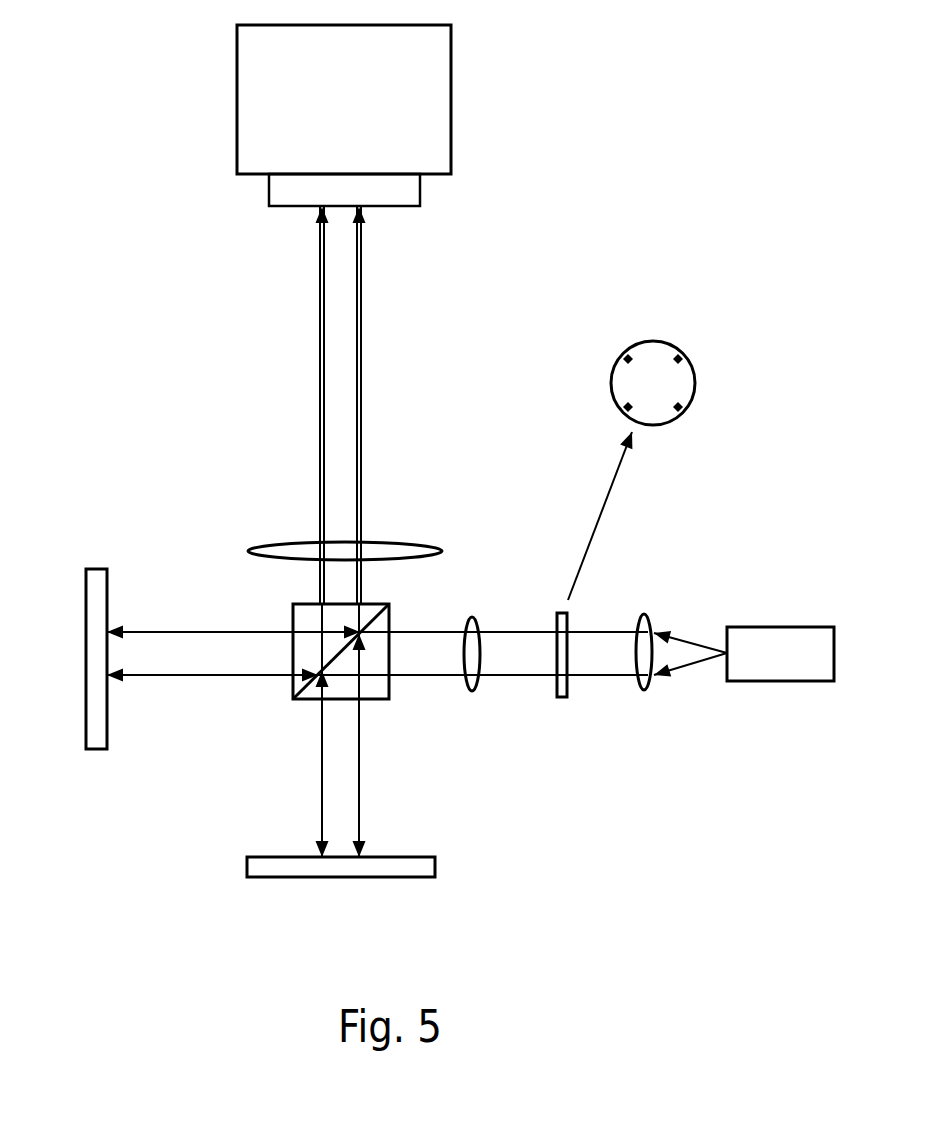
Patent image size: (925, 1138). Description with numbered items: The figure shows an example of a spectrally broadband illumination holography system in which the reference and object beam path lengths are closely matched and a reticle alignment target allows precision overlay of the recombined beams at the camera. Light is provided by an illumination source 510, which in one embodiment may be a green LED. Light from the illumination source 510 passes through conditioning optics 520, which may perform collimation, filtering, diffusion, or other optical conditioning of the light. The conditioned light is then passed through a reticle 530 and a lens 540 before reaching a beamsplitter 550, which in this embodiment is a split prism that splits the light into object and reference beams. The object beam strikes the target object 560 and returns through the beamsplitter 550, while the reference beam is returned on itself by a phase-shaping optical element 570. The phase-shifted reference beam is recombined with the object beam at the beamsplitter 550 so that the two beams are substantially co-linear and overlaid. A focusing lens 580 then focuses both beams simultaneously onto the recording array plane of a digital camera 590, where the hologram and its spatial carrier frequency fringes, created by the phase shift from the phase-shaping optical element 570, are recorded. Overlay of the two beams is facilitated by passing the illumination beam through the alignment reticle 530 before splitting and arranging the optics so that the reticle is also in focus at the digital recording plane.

The illumination source 510 is at (805, 627).
The conditioning optics 520 is at (646, 690).
The reticle 530 is at (562, 697).
The lens 540 is at (472, 692).
The beamsplitter 550 is at (300, 700).
The target object 560 is at (385, 877).
The phase-shaping optical element 570 is at (86, 643).
The focusing lens 580 is at (403, 542).
The digital camera 590 is at (451, 115).